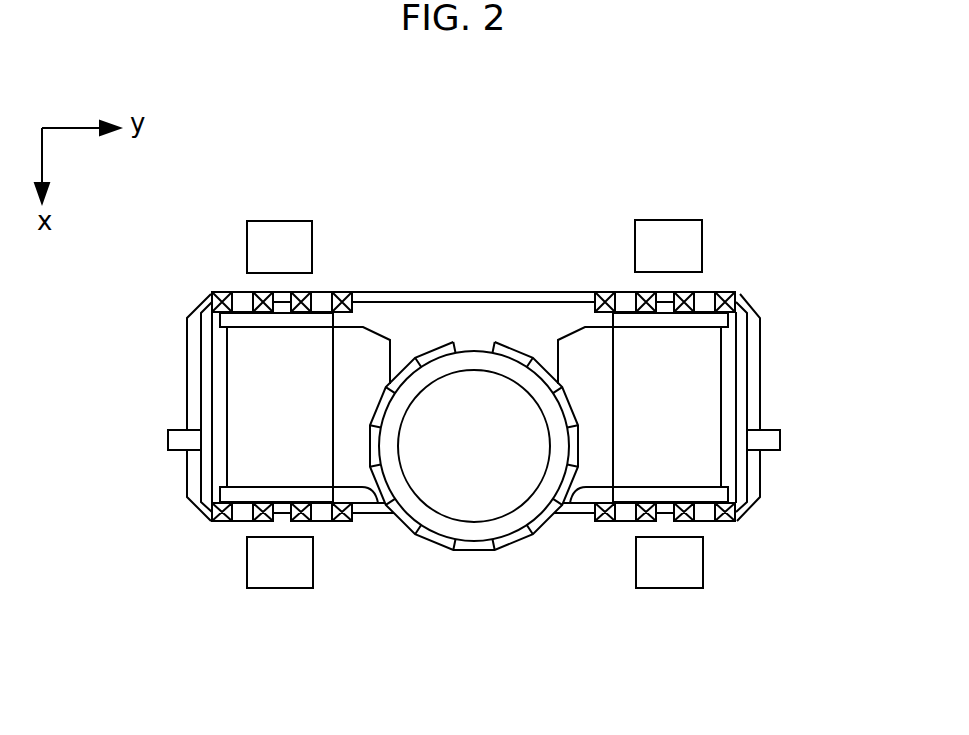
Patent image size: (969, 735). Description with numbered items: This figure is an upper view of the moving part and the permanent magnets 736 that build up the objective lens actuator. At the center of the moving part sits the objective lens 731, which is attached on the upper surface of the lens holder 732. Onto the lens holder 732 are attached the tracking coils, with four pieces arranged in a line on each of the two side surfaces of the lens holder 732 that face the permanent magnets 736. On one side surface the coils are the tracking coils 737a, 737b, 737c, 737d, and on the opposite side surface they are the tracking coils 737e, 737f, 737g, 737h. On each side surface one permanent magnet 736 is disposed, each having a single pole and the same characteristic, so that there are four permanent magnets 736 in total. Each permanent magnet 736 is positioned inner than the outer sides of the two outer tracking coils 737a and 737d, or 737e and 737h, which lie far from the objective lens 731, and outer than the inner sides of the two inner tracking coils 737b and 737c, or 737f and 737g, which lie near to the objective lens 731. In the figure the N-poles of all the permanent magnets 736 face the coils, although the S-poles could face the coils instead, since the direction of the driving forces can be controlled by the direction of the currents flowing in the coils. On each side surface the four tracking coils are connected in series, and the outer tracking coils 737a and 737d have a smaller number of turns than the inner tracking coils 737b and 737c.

The objective lens 731 is at (487, 478).
The lens holder 732 is at (190, 441).
The permanent magnets 736 is at (273, 220).
The tracking coil 737a is at (211, 521).
The tracking coil 737b is at (347, 521).
The tracking coil 737c is at (598, 521).
The tracking coil 737d is at (738, 521).
The tracking coil 737e is at (208, 296).
The tracking coil 737f is at (347, 292).
The tracking coil 737g is at (598, 292).
The tracking coil 737h is at (733, 292).